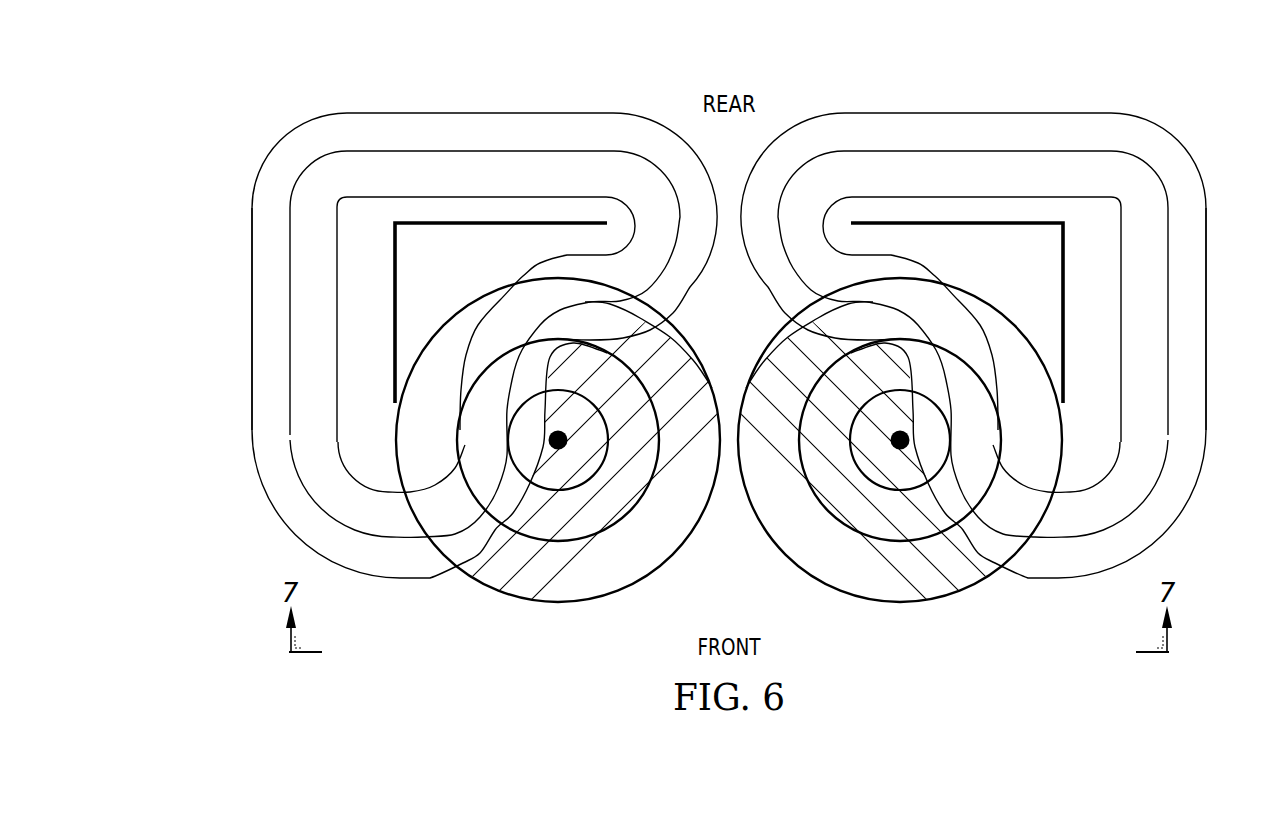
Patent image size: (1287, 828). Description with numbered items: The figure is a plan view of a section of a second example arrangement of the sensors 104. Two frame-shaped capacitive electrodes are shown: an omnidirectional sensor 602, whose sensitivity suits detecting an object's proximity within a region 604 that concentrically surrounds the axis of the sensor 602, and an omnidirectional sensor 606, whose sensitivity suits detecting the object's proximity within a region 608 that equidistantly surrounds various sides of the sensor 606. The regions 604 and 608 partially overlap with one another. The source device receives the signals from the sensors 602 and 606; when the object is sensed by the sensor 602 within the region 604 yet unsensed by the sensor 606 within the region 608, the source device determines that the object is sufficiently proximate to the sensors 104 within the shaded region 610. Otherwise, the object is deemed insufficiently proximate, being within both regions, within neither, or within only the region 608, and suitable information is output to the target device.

The sensors 104 is at (651, 89).
The omnidirectional sensor 602 is at (729, 525).
The region 604 is at (729, 487).
The omnidirectional sensor 606 is at (729, 292).
The region 608 is at (729, 345).
The shaded region 610 is at (699, 463).